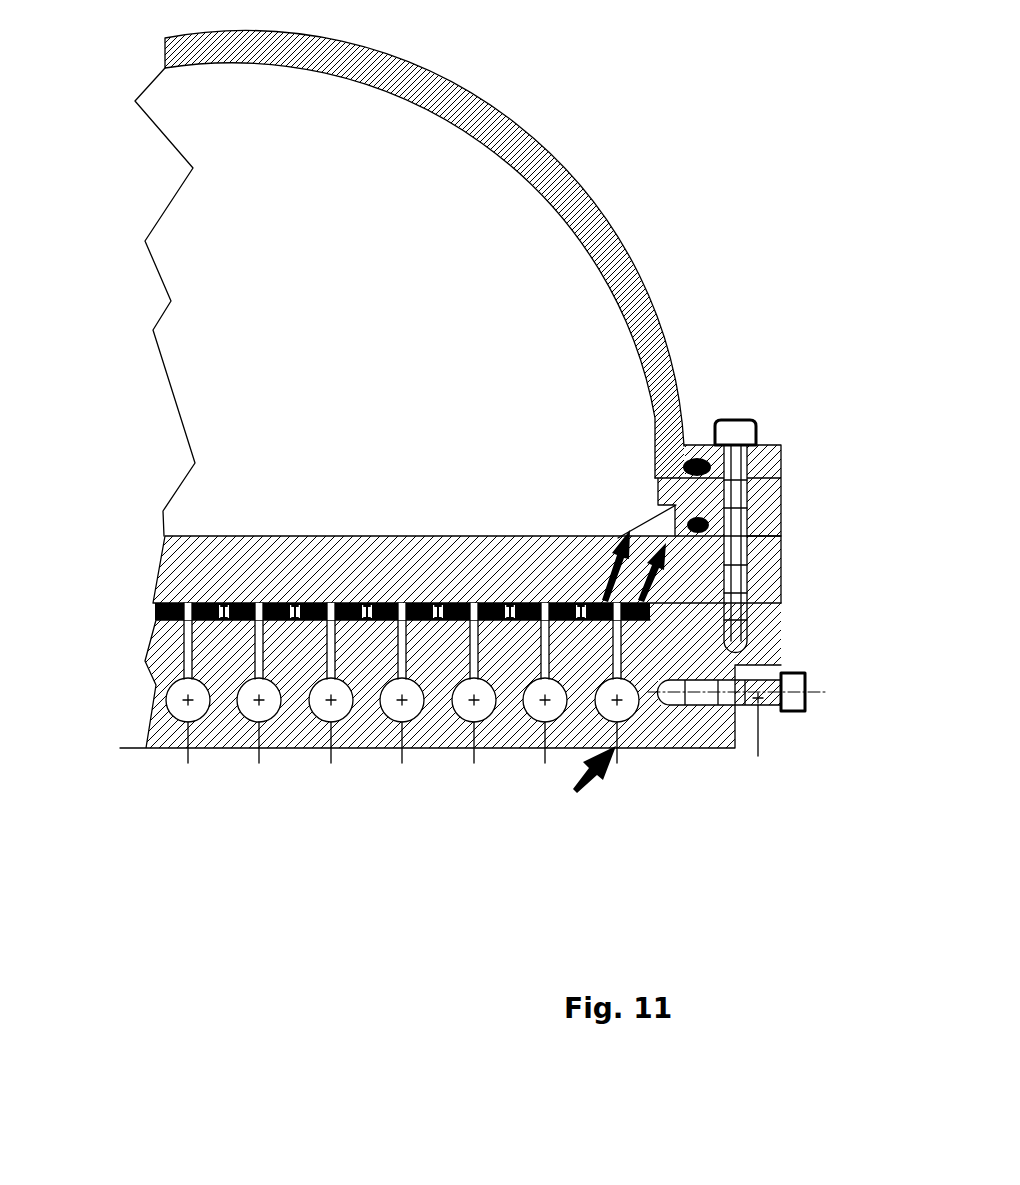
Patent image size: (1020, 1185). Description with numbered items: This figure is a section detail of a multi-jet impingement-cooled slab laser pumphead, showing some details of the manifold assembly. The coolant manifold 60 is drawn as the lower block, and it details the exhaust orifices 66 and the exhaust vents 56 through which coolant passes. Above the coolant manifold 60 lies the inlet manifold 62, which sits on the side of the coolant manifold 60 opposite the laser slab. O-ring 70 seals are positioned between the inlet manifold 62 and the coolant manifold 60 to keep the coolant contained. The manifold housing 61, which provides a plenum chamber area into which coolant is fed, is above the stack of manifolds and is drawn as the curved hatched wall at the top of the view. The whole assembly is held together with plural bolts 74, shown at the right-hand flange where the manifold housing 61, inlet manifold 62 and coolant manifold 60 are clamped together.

The manifold housing 61 is at (499, 112).
The inlet manifold 62 is at (143, 562).
The coolant manifold 60 is at (138, 680).
The O-ring seal 70 is at (719, 435).
The bolt 74 is at (797, 665).
The exhaust vent 56 is at (648, 740).
The exhaust orifice 66 is at (567, 783).